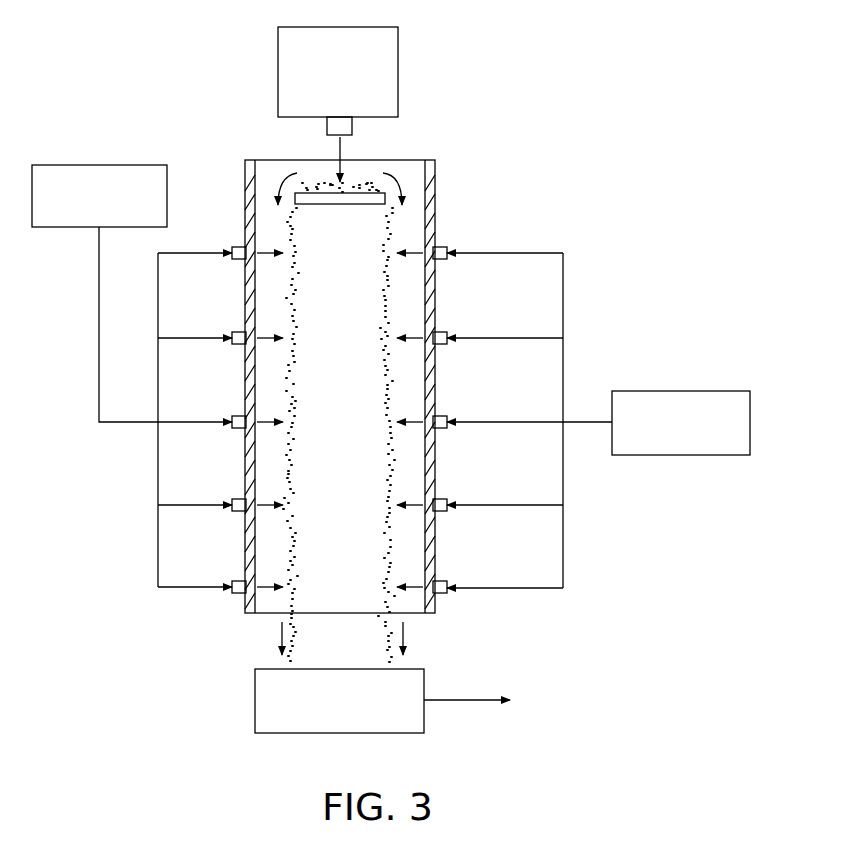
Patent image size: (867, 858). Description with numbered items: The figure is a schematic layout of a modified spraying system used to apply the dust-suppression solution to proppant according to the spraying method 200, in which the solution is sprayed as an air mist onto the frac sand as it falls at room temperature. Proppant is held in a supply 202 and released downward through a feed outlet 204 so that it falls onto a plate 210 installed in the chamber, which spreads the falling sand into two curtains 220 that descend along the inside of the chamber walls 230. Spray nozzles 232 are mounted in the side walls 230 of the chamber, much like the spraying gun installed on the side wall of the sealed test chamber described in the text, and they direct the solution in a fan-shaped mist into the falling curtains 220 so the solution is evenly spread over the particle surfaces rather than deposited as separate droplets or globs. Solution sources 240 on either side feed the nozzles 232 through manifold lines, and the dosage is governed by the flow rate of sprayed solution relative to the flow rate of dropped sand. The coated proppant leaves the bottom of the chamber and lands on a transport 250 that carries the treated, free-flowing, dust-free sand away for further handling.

The spraying method 200 is at (198, 60).
The proppant source 202 is at (400, 47).
The proppant feed outlet 204 is at (347, 153).
The deflector plate 210 is at (385, 193).
The proppant curtain 220 is at (277, 188).
The chamber wall 230 is at (262, 535).
The spray nozzles 232 is at (238, 335).
The solution source 240 is at (100, 165).
The transport device 250 is at (255, 712).